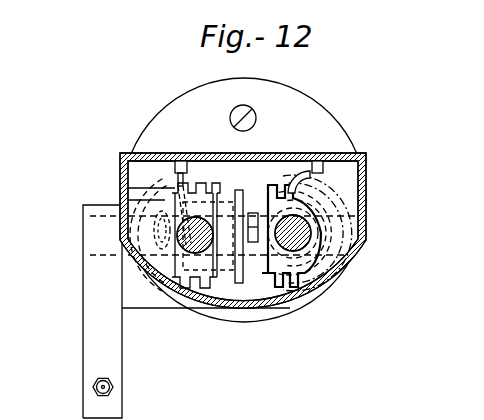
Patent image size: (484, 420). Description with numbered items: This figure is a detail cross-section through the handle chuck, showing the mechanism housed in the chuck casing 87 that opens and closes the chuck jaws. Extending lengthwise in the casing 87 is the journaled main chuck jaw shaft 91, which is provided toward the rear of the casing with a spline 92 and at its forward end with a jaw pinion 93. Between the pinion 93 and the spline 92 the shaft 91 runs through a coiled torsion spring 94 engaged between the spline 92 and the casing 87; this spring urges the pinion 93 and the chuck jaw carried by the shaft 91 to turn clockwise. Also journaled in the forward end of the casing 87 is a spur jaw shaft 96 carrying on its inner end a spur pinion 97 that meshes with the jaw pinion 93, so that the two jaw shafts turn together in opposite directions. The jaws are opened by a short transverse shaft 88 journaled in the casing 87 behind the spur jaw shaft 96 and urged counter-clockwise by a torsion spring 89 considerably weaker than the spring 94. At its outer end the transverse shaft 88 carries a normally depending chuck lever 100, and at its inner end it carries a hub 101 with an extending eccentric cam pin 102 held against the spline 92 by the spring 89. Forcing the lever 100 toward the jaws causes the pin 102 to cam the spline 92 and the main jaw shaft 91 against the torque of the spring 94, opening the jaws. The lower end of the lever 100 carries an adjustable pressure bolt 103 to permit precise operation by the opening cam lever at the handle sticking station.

The chuck casing 87 is at (365, 224).
The transverse shaft 88 is at (94, 233).
The torsion spring 89 is at (181, 161).
The main chuck jaw shaft 91 is at (305, 250).
The spline 92 is at (264, 266).
The jaw pinion 93 is at (343, 237).
The coiled torsion spring 94 is at (297, 174).
The spur jaw shaft 96 is at (153, 250).
The spur pinion 97 is at (176, 290).
The chuck lever 100 is at (117, 362).
The hub 101 is at (233, 192).
The eccentric cam pin 102 is at (252, 213).
The adjustable pressure bolt 103 is at (113, 388).